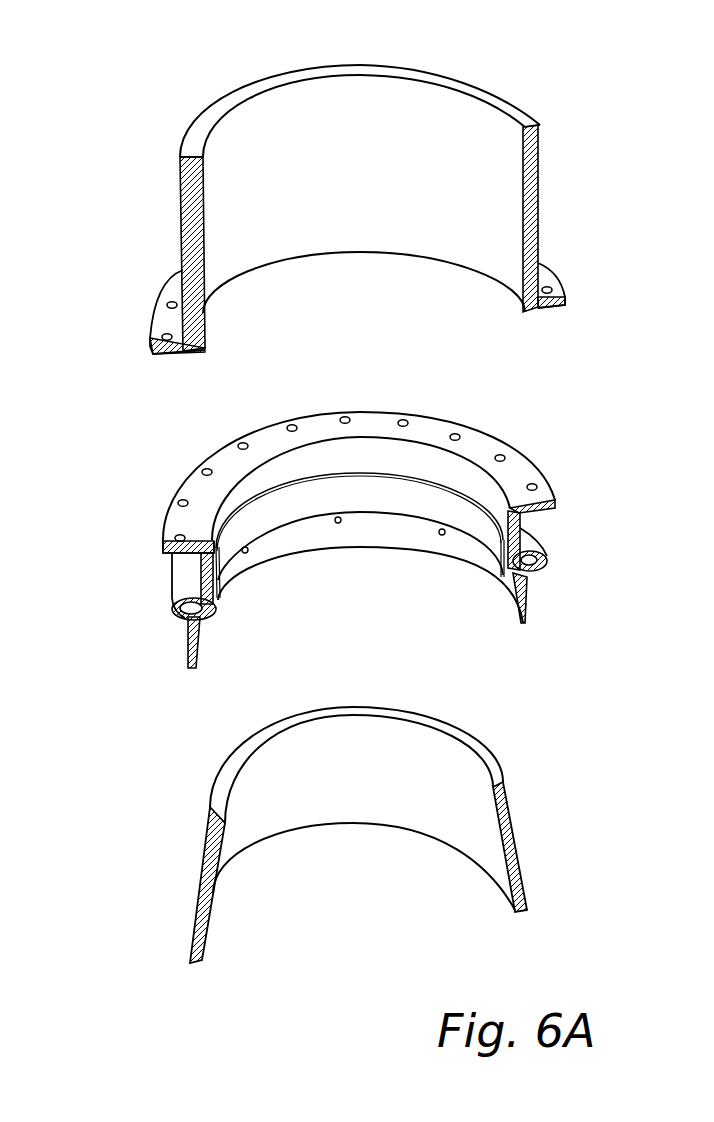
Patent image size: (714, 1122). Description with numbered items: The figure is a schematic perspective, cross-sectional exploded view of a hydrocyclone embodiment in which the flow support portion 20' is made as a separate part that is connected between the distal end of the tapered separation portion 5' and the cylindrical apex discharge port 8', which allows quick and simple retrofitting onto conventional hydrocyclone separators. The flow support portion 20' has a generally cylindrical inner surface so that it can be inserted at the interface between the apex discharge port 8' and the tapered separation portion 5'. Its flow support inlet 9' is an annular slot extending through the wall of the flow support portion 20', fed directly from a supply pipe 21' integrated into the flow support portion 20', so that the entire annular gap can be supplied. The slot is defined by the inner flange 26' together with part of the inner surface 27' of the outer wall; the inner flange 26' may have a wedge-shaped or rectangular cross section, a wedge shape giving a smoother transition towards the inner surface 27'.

The apex discharge port 8' is at (311, 188).
The flow support portion 20' is at (334, 515).
The inner surface of the outer wall of the flow support portion 27' is at (359, 452).
The inner flange 26' is at (360, 477).
The flow support inlet 9' is at (377, 520).
The supply pipe 21' is at (323, 614).
The tapered separation portion 5' is at (313, 835).